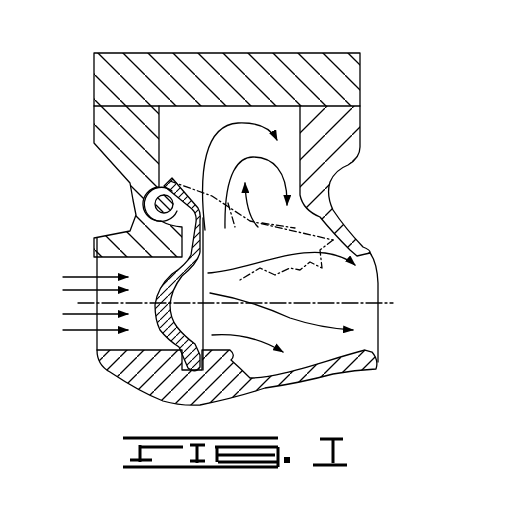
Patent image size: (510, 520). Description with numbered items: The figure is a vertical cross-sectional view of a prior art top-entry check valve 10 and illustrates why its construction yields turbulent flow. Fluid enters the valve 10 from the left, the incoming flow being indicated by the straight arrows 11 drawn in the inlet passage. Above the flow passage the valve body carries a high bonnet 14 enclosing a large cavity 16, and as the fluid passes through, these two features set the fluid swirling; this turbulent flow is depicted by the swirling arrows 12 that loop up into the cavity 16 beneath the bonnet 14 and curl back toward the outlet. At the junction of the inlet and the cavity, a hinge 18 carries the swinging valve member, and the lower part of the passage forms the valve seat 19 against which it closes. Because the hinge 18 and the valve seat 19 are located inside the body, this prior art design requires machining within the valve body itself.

The top-entry check valve 10 is at (98, 51).
The straight arrows 11 is at (79, 276).
The swirling arrows 12 is at (225, 124).
The high bonnet 14 is at (338, 53).
The large cavity 16 is at (177, 120).
The hinge 18 is at (146, 194).
The valve seat 19 is at (162, 397).